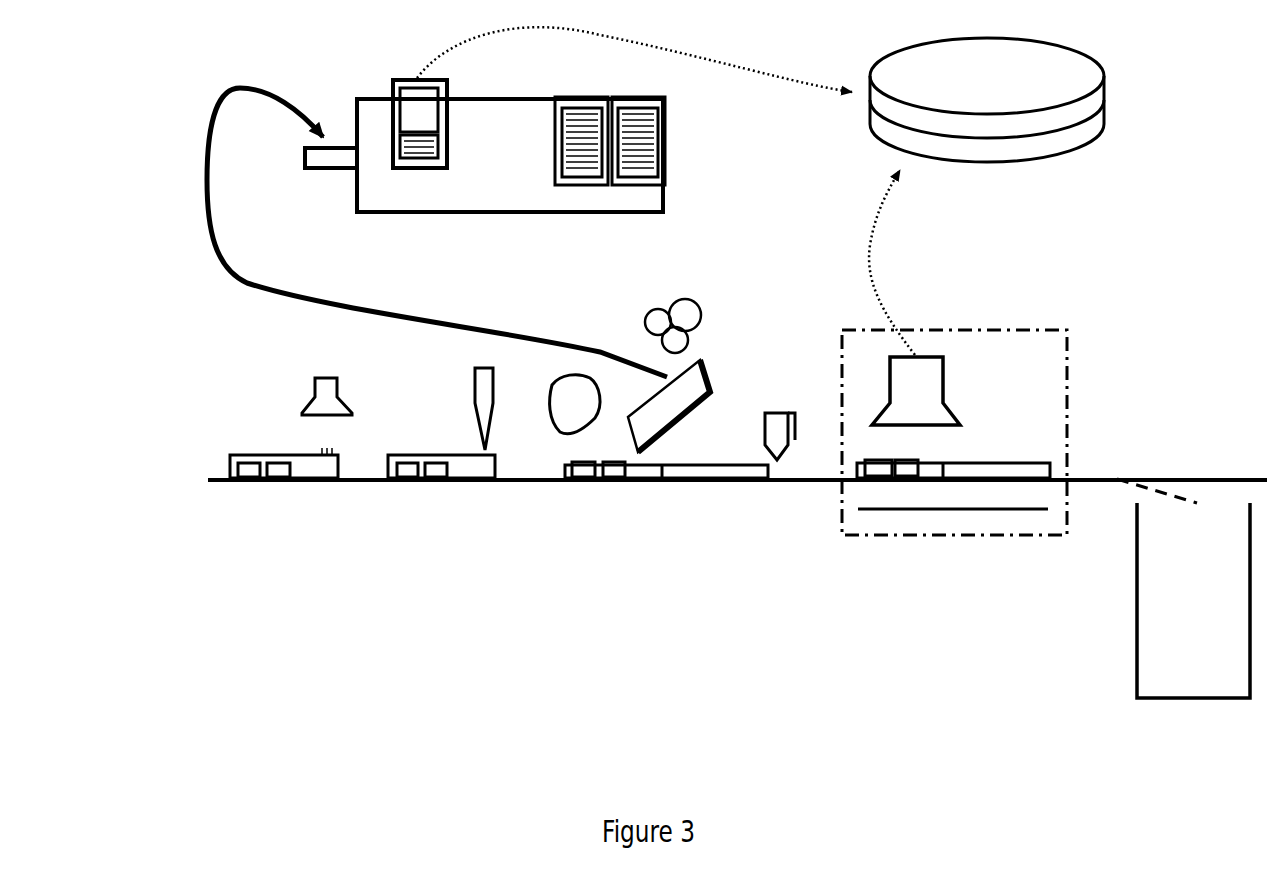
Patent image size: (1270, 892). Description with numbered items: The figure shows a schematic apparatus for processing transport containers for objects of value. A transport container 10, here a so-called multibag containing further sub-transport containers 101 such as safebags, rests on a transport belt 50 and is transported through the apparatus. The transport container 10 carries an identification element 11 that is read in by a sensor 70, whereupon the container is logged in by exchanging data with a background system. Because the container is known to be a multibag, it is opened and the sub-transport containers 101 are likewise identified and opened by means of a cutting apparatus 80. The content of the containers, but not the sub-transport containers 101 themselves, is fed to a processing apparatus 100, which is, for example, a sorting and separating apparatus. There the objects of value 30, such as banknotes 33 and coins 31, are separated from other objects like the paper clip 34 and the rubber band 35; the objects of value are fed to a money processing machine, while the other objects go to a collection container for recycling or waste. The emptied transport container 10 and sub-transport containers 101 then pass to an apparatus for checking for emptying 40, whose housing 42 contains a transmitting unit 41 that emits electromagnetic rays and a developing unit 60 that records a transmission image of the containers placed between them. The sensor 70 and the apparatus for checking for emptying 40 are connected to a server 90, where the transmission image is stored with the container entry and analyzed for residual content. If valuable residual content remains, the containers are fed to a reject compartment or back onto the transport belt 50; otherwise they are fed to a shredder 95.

The transport container 10 is at (633, 504).
The identification element 11 is at (325, 441).
The objects of value 30 is at (686, 353).
The coins 31 is at (650, 310).
The banknotes 33 is at (710, 397).
The paper clip 34 is at (779, 401).
The rubber band 35 is at (580, 364).
The apparatus for checking for emptying 40 is at (957, 399).
The transmitting unit 41 is at (943, 382).
The housing 42 is at (1065, 347).
The transport belt 50 is at (219, 483).
The developing unit 60 is at (953, 510).
The sensor 70 is at (312, 387).
The cutting apparatus 80 is at (473, 402).
The server 90 is at (1083, 142).
The shredder 95 is at (1137, 665).
The processing apparatus 100 is at (664, 226).
The sub-transport containers 101 is at (278, 483).